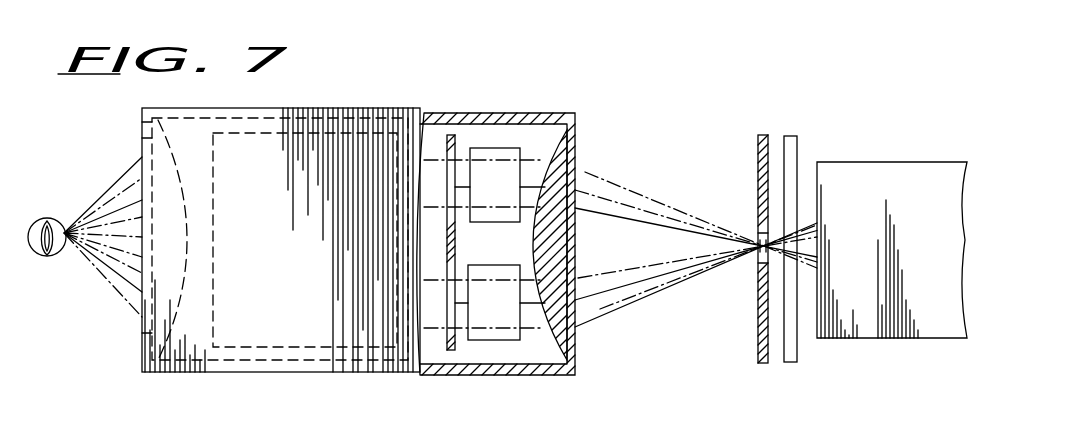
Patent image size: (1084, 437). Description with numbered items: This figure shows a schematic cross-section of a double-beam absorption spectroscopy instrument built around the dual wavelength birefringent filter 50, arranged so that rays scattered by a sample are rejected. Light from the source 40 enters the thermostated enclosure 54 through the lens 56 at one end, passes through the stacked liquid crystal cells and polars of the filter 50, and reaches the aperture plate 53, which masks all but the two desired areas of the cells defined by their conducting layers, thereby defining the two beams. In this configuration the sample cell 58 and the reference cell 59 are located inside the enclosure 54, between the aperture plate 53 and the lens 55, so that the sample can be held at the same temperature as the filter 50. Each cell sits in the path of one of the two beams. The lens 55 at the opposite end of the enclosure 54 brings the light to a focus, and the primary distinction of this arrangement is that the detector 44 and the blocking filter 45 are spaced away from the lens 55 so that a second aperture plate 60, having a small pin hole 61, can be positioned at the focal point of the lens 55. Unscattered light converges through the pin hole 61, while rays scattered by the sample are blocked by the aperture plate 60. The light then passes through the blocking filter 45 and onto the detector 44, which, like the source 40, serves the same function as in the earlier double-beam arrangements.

The source 40 is at (50, 218).
The detector 44 is at (880, 168).
The blocking filter 45 is at (797, 142).
The birefringent filter 50 is at (527, 109).
The aperture plate 53 is at (447, 190).
The thermostated enclosure 54 is at (398, 112).
The lens 55 is at (576, 153).
The lens 56 is at (178, 168).
The sample cell 58 is at (493, 157).
The reference cell 59 is at (489, 332).
The aperture plate 60 is at (757, 142).
The pin hole 61 is at (757, 240).